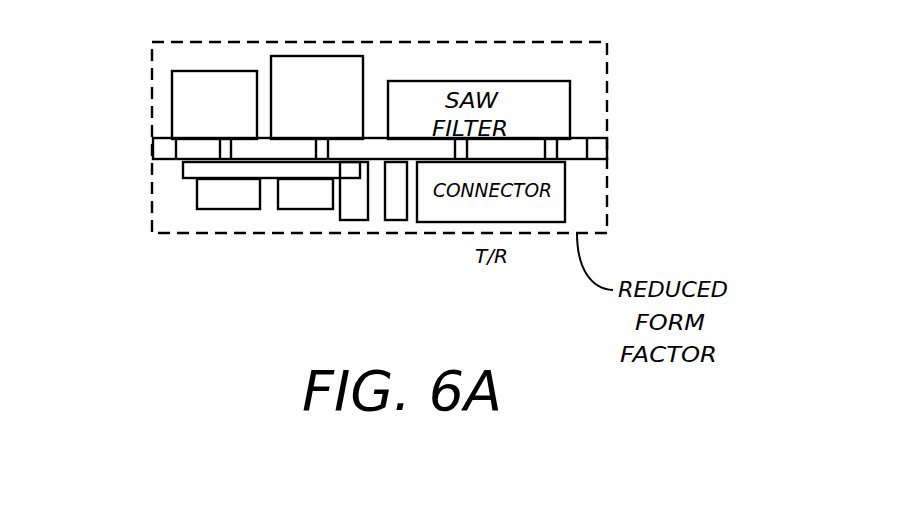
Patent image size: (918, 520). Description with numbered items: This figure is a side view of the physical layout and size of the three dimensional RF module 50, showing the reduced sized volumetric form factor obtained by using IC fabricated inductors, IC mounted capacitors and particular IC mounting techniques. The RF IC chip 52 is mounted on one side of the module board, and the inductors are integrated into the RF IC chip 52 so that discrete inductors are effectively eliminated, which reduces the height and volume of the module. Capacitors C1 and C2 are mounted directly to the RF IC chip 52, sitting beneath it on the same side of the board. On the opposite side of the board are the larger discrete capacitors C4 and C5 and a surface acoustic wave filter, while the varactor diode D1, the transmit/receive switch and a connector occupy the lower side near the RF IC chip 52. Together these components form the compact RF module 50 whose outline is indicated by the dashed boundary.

The RF module 50 is at (70, 167).
The RF IC chip 52 is at (183, 164).
The capacitor C1 is at (228, 194).
The capacitor C2 is at (305, 194).
The capacitor C4 is at (214, 105).
The capacitor C5 is at (317, 97).
The varactor diode D1 is at (356, 222).